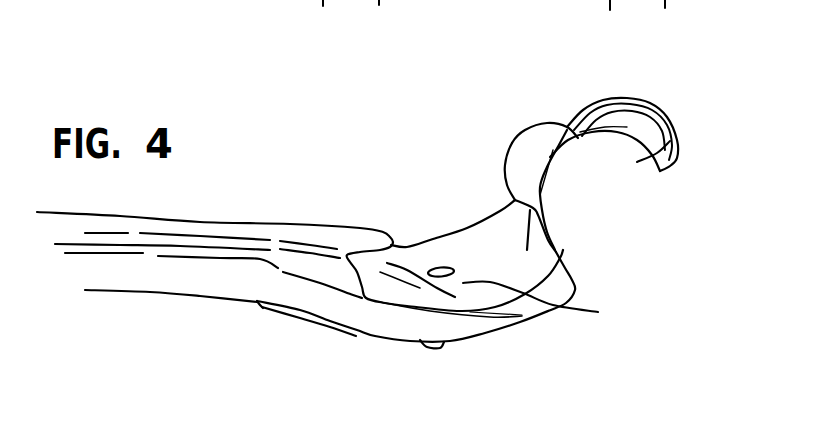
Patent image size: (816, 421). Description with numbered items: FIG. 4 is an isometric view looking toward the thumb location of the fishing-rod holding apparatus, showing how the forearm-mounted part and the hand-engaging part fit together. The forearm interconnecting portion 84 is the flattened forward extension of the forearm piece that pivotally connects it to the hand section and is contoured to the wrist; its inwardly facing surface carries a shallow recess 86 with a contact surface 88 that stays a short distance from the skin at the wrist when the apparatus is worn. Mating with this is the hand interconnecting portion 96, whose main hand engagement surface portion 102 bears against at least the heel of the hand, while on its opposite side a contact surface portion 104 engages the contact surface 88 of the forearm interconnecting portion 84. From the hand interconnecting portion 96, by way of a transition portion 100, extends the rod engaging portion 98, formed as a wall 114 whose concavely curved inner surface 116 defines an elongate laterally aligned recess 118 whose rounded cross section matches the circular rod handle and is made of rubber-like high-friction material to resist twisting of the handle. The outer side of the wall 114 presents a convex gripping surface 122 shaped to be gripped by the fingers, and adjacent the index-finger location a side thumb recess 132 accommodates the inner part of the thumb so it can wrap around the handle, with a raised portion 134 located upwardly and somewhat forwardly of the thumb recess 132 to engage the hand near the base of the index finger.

The forearm interconnecting portion 84 is at (488, 330).
The shallow recess 86 is at (362, 303).
The contact surface 88 is at (427, 310).
The hand interconnecting portion 96 is at (435, 237).
The rod engaging portion 98 is at (525, 125).
The transition portion 100 is at (558, 246).
The main hand engagement surface portion 102 is at (551, 303).
The contact surface portion 104 is at (397, 303).
The wall 114 is at (589, 106).
The concavely curved inner surface 116 is at (642, 155).
The elongate laterally aligned recess 118 is at (600, 157).
The gripping surface 122 is at (623, 95).
The side thumb recess 132 is at (570, 275).
The raised portion 134 is at (508, 155).